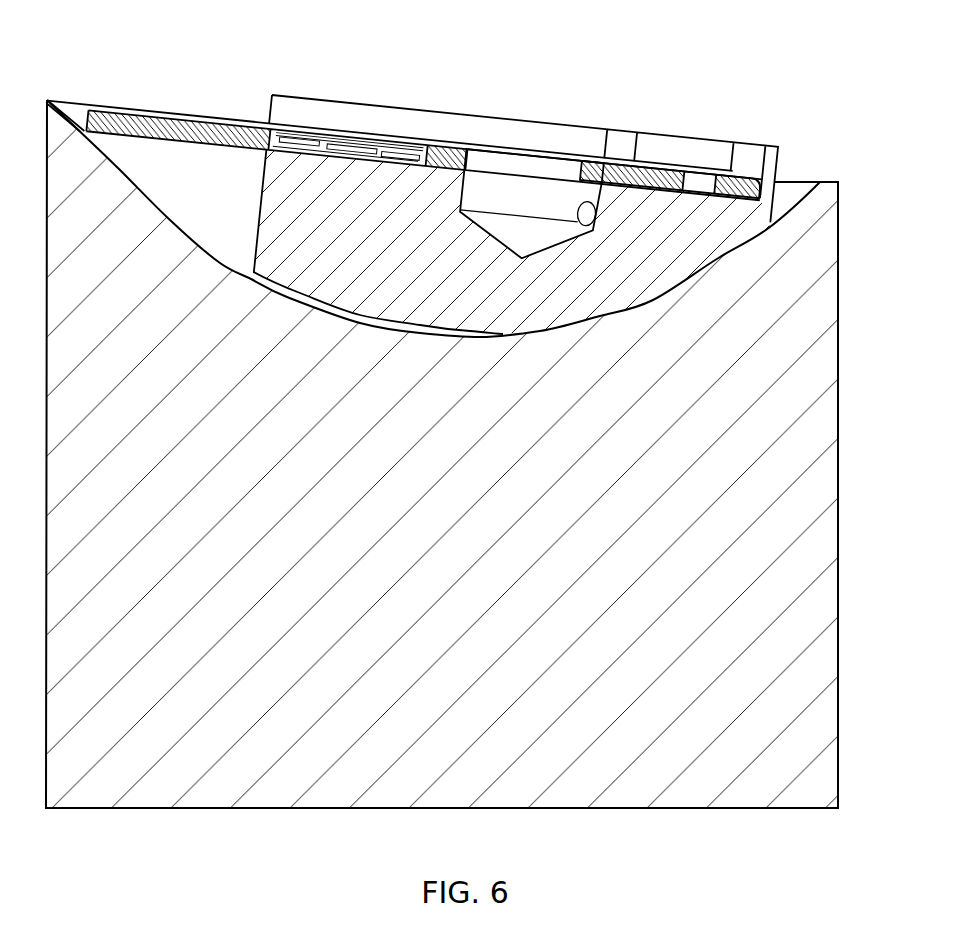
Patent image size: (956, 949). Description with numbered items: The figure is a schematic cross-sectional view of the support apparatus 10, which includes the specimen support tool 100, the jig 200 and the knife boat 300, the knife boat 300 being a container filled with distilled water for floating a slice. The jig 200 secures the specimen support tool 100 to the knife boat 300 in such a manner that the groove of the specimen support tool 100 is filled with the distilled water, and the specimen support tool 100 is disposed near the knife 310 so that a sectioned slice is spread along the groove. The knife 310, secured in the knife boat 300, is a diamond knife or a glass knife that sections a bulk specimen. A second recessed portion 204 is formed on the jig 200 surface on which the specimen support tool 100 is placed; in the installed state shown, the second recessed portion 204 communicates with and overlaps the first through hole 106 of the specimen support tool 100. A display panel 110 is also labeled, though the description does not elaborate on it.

The support apparatus 10 is at (731, 61).
The specimen support tool 100 is at (232, 128).
The display panel 110 is at (353, 138).
The first through hole 106 is at (510, 164).
The second recessed portion 204 is at (556, 196).
The jig 200 is at (641, 207).
The knife boat 300 is at (822, 205).
The knife 310 is at (49, 98).